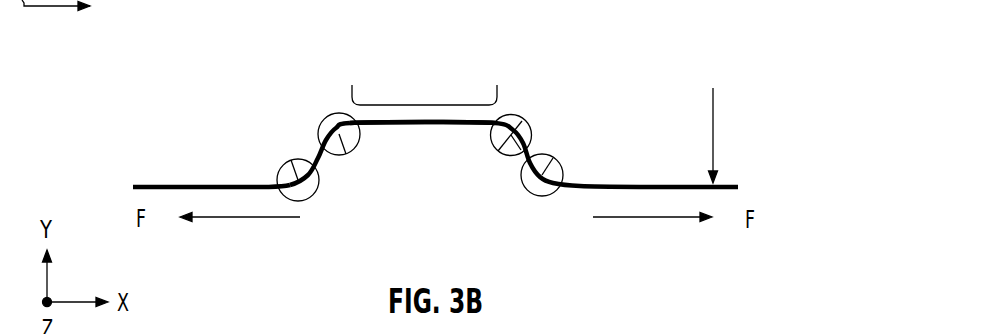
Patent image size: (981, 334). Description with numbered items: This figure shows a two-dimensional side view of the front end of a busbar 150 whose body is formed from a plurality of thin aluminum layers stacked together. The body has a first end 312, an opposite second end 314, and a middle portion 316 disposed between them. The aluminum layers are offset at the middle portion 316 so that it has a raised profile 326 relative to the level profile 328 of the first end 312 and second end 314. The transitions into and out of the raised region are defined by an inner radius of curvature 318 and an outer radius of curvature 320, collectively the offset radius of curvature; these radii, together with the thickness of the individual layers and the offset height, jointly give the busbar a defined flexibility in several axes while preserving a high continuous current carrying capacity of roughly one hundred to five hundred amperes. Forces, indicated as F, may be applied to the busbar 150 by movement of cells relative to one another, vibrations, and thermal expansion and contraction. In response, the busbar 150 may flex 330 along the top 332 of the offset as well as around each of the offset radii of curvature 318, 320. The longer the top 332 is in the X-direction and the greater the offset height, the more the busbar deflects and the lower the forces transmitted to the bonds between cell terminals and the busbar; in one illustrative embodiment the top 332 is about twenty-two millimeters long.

The busbar 150 is at (430, 67).
The first end 312 is at (115, 117).
The second end 314 is at (783, 152).
The middle portion 316 is at (408, 225).
The inner radius of curvature 318 is at (352, 148).
The outer radius of curvature 320 is at (282, 166).
The raised profile 326 is at (309, 151).
The level profile 328 is at (717, 85).
The flex 330 is at (424, 94).
The top 332 is at (425, 125).